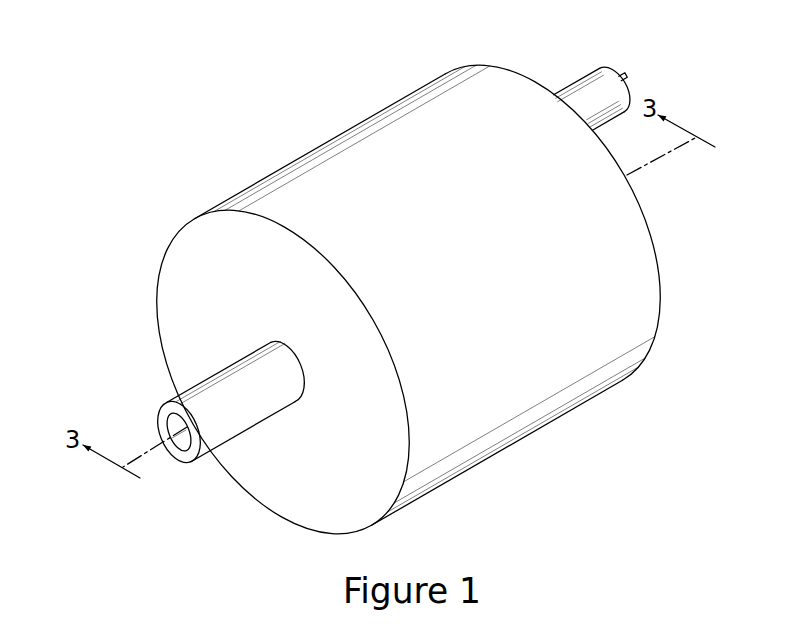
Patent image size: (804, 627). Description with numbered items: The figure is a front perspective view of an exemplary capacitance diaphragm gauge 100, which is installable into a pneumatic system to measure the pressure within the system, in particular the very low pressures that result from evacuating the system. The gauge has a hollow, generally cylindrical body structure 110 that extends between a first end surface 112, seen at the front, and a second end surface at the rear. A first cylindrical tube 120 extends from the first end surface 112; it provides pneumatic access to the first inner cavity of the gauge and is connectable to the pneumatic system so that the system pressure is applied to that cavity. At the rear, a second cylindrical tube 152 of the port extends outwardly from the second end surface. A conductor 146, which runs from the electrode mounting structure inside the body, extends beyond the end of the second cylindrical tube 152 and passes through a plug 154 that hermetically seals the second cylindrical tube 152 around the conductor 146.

The capacitance diaphragm gauge 100 is at (430, 291).
The cylindrical body structure 110 is at (355, 160).
The first end surface 112 is at (190, 278).
The first cylindrical tube 120 is at (180, 402).
The conductor 146 is at (621, 75).
The second cylindrical tube 152 is at (625, 68).
The plug 154 is at (623, 92).